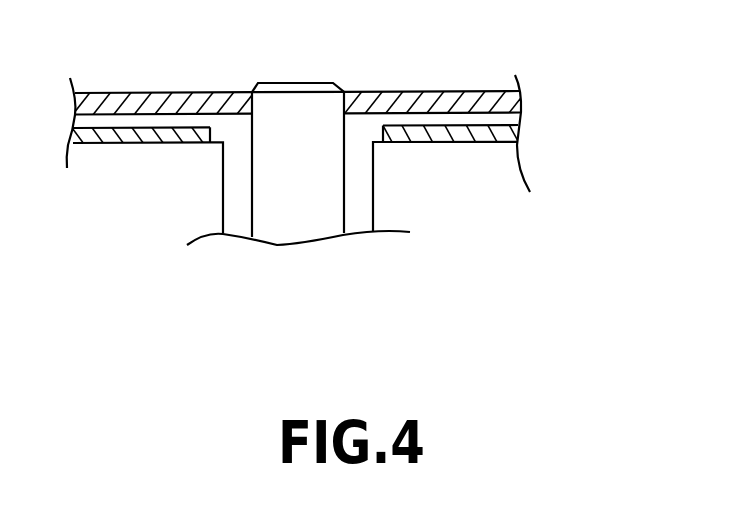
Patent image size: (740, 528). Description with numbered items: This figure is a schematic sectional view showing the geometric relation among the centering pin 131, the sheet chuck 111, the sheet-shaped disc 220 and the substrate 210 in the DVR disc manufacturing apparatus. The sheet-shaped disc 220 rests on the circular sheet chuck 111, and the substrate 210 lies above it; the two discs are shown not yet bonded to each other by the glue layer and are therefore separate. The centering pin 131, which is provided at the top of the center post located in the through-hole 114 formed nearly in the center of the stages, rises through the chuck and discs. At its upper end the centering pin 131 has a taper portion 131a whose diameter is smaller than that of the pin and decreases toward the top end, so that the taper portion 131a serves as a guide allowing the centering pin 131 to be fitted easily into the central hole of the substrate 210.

The sheet chuck 111 is at (505, 167).
The through-hole 114 is at (361, 200).
The centering pin 131 is at (297, 228).
The taper portion 131a is at (307, 83).
The substrate 210 is at (460, 92).
The sheet-shaped disc 220 is at (518, 131).